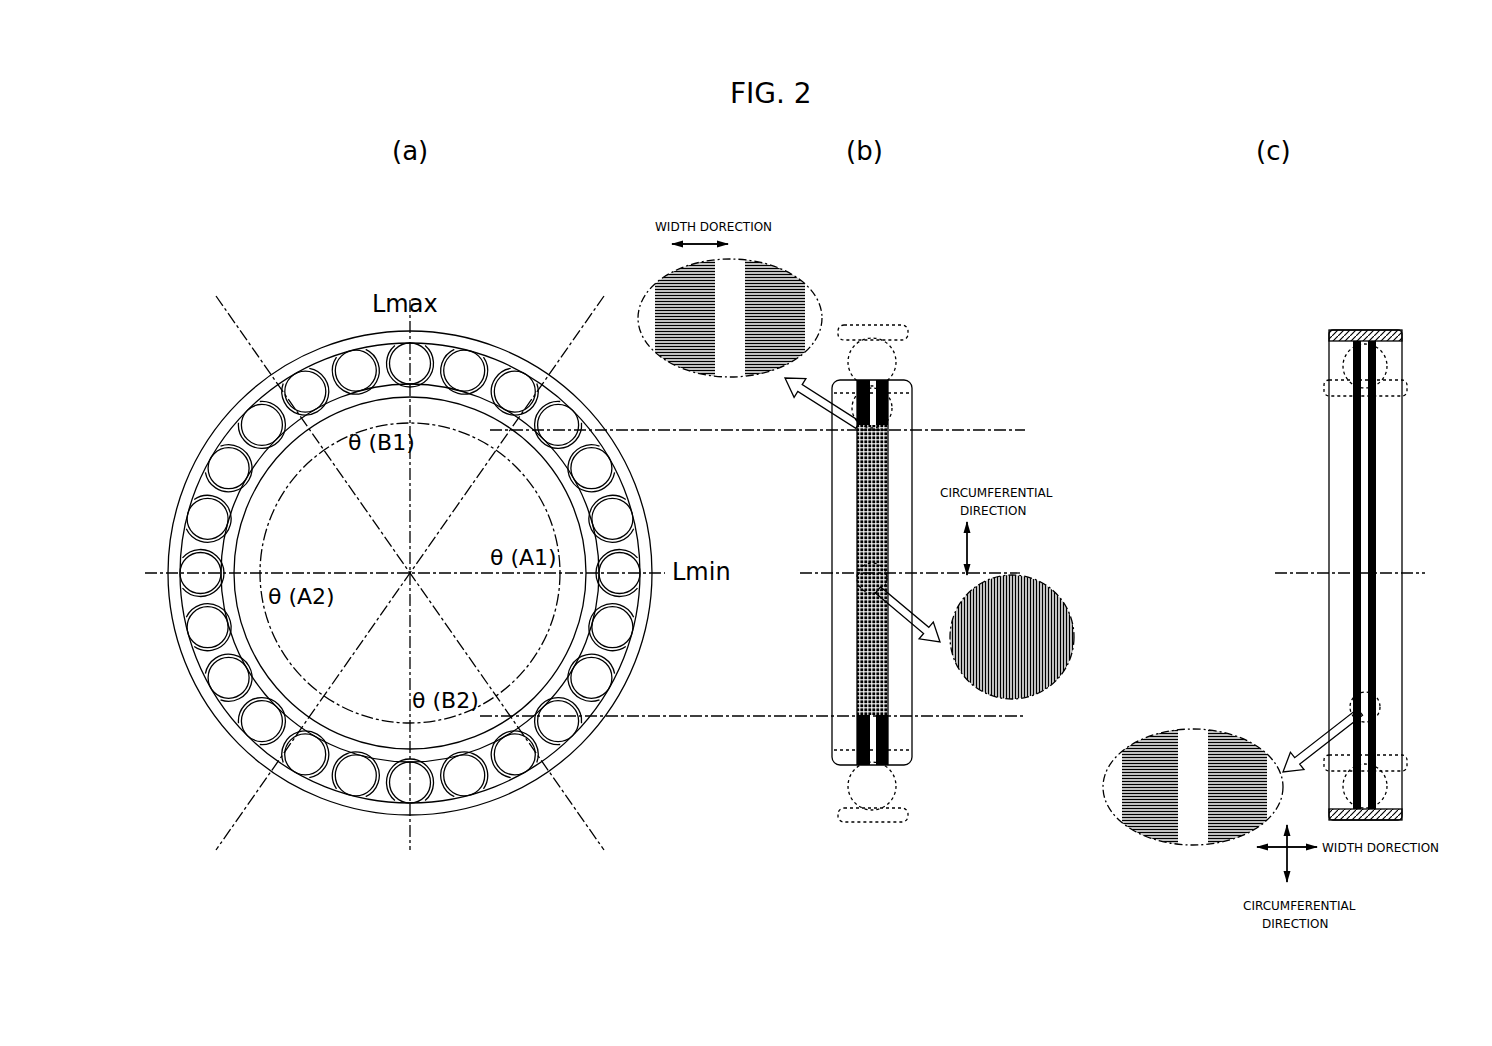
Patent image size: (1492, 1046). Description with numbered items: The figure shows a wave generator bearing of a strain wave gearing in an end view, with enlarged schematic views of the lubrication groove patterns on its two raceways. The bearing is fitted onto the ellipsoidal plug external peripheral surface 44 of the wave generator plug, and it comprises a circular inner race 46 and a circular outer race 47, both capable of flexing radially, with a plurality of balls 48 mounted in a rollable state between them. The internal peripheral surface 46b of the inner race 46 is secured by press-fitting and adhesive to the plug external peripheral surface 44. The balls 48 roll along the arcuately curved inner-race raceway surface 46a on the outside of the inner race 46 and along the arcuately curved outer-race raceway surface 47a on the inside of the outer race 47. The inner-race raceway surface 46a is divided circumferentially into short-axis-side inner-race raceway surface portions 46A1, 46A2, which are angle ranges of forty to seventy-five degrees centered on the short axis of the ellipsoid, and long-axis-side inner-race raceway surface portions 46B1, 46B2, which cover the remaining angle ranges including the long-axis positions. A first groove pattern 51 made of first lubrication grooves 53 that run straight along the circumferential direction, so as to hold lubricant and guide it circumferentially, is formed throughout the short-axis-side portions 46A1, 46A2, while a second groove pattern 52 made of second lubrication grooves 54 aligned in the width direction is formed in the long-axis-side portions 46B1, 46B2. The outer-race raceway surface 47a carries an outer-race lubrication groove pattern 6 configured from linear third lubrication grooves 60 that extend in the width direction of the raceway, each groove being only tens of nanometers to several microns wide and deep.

The plug external peripheral surface 44 is at (283, 305).
The outer race 47 is at (323, 348).
The outer-race raceway surface 47a is at (277, 380).
The balls 48 is at (512, 376).
The inner race 46 is at (250, 455).
The inner-race raceway surface 46a is at (880, 490).
The internal peripheral surface 46b is at (240, 505).
The short-axis-side inner-race raceway surface portion 46A1 is at (592, 494).
The short-axis-side inner-race raceway surface portion 46A2 is at (212, 601).
The long-axis-side inner-race raceway surface portion 46B1 is at (440, 352).
The long-axis-side inner-race raceway surface portion 46B2 is at (380, 762).
The second groove pattern 52 is at (775, 252).
The second lubrication grooves 54 is at (800, 265).
The first groove pattern 51 is at (1030, 580).
The first lubrication grooves 53 is at (1058, 592).
The outer-race lubrication groove pattern 6 is at (1226, 722).
The third lubrication grooves 60 is at (1247, 745).